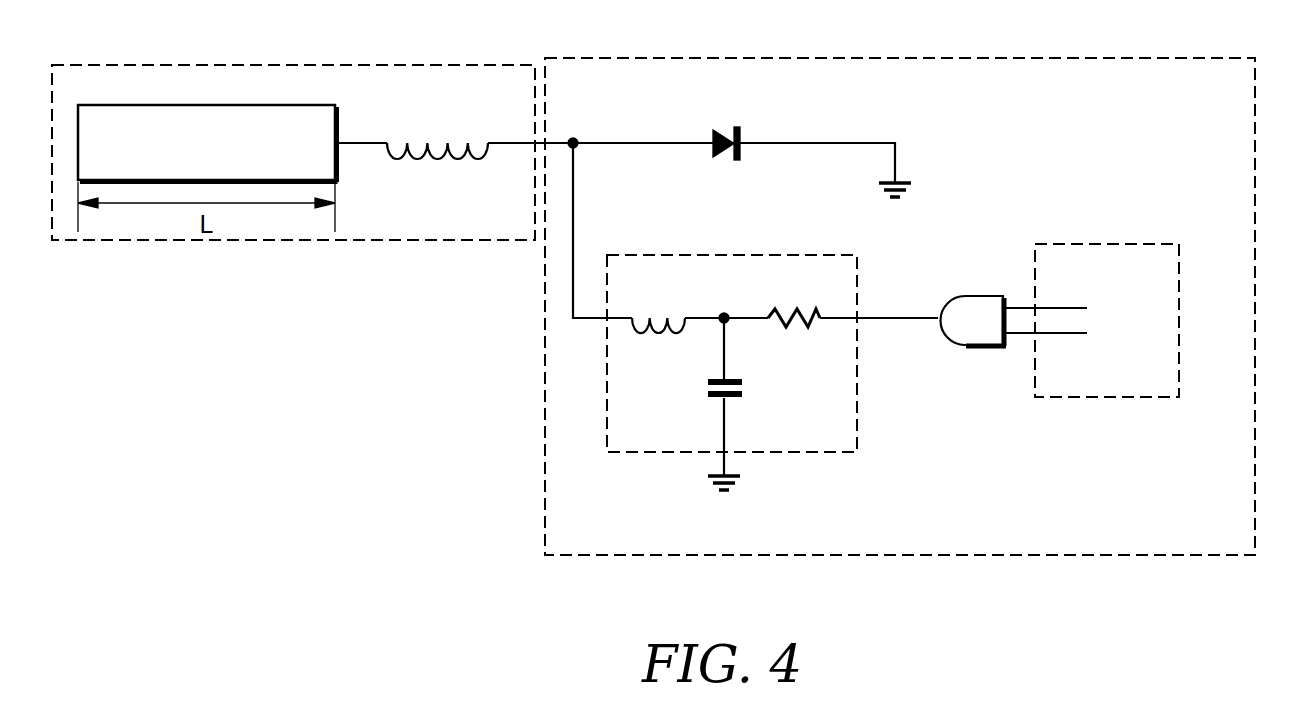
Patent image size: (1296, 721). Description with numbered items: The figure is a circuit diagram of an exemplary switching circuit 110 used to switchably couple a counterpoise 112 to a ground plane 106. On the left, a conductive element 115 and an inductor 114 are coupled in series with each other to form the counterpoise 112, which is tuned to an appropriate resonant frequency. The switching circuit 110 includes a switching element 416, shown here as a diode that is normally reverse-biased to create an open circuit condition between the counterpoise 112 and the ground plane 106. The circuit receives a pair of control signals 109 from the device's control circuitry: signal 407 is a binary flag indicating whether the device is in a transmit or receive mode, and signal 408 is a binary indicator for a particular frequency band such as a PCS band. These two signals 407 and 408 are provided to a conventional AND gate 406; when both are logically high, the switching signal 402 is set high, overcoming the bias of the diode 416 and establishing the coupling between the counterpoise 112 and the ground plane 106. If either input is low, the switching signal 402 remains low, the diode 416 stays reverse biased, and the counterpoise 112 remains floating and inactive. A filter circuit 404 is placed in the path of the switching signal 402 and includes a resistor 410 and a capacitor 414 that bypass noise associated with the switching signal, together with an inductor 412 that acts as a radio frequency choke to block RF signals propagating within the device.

The ground plane 106 is at (899, 178).
The control signals 109 is at (1160, 244).
The switching circuit 110 is at (1237, 58).
The counterpoise 112 is at (440, 65).
The inductor 114 is at (447, 160).
The conductive element 115 is at (325, 105).
The switching signal 402 is at (573, 180).
The filter circuit 404 is at (832, 452).
The AND gate 406 is at (983, 295).
The signal 407 is at (1065, 307).
The signal 408 is at (1068, 334).
The resistor 410 is at (791, 326).
The inductor 412 is at (658, 334).
The capacitor 414 is at (733, 398).
The switching element 416 is at (724, 158).